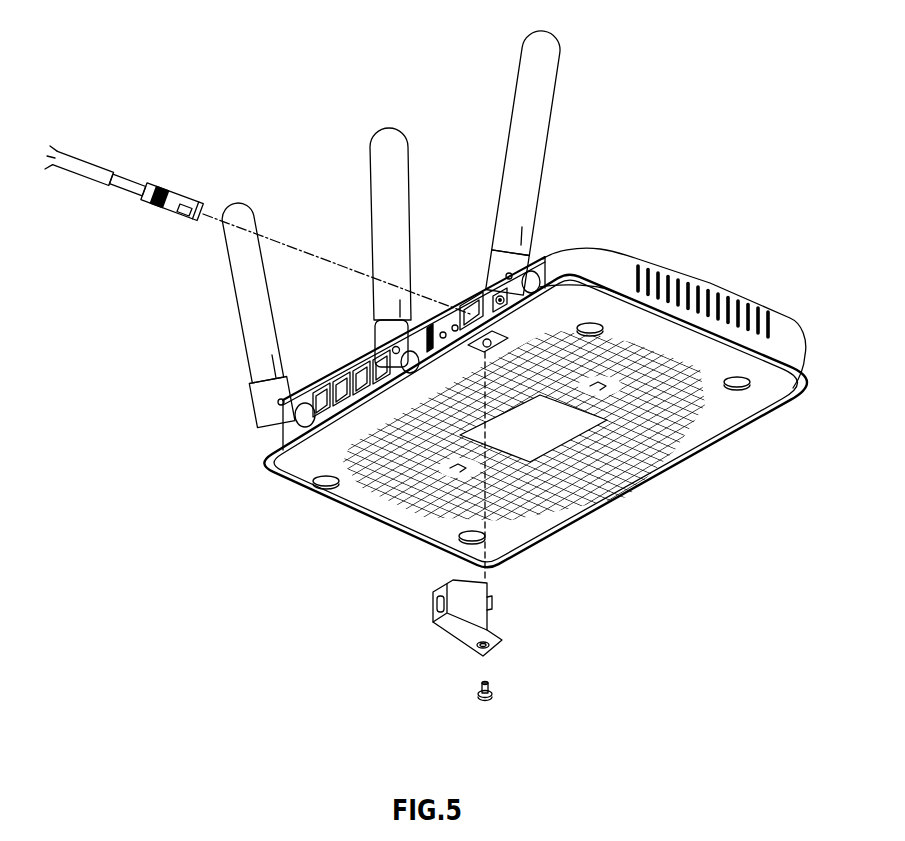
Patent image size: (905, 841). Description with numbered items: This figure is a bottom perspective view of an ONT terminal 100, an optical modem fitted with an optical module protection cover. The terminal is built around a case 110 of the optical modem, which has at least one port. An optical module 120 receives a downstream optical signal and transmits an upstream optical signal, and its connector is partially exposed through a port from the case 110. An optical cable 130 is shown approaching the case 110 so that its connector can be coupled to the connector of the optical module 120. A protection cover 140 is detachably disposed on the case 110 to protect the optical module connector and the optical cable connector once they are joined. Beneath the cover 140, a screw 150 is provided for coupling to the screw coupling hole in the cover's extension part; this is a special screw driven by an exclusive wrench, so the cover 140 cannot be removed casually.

The ONT terminal 100 is at (661, 169).
The case 110 is at (637, 252).
The optical module 120 is at (470, 290).
The optical cable 130 is at (95, 168).
The protection cover 140 is at (448, 628).
The screw 150 is at (477, 695).